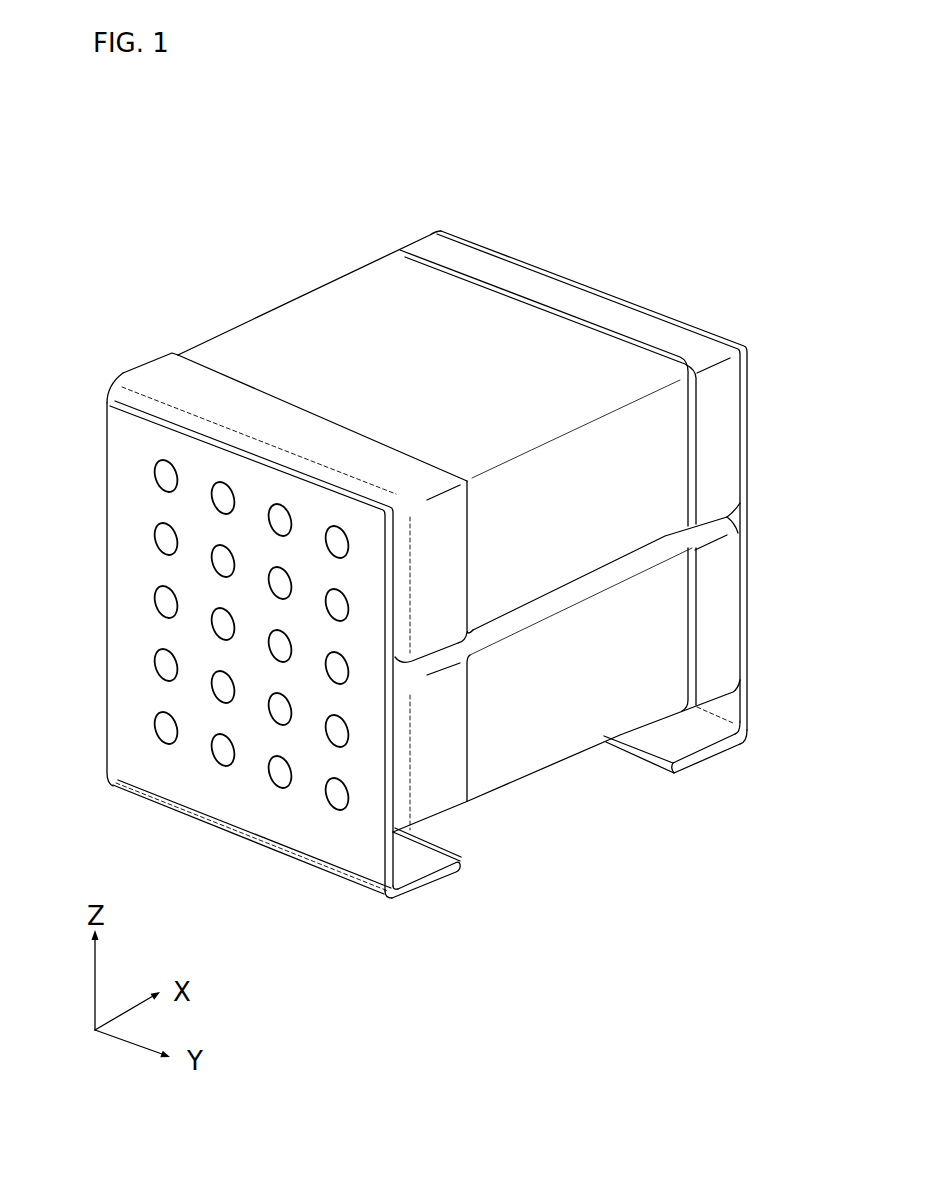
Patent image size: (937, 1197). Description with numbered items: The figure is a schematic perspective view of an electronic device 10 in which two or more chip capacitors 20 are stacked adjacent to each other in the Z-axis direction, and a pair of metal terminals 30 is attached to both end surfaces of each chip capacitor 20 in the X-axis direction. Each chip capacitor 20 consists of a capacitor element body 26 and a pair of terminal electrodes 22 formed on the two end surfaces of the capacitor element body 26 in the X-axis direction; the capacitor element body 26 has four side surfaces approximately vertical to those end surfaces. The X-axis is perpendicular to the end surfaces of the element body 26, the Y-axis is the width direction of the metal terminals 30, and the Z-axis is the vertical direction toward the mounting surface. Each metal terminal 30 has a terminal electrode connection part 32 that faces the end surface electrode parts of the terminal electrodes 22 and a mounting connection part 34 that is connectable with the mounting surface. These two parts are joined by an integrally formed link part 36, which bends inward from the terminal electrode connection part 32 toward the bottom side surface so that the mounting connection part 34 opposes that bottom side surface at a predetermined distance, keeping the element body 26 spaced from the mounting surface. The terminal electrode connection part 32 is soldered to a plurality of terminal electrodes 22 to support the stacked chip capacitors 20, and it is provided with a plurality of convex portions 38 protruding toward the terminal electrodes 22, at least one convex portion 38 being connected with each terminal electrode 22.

The electronic device 10 is at (262, 283).
The chip capacitor 20 is at (563, 355).
The terminal electrode 22 is at (436, 236).
The capacitor element body 26 is at (361, 325).
The metal terminal 30 is at (142, 562).
The terminal electrode connection part 32 is at (748, 604).
The mounting connection part 34 is at (711, 757).
The link part 36 is at (752, 687).
The convex portion 38 is at (210, 689).